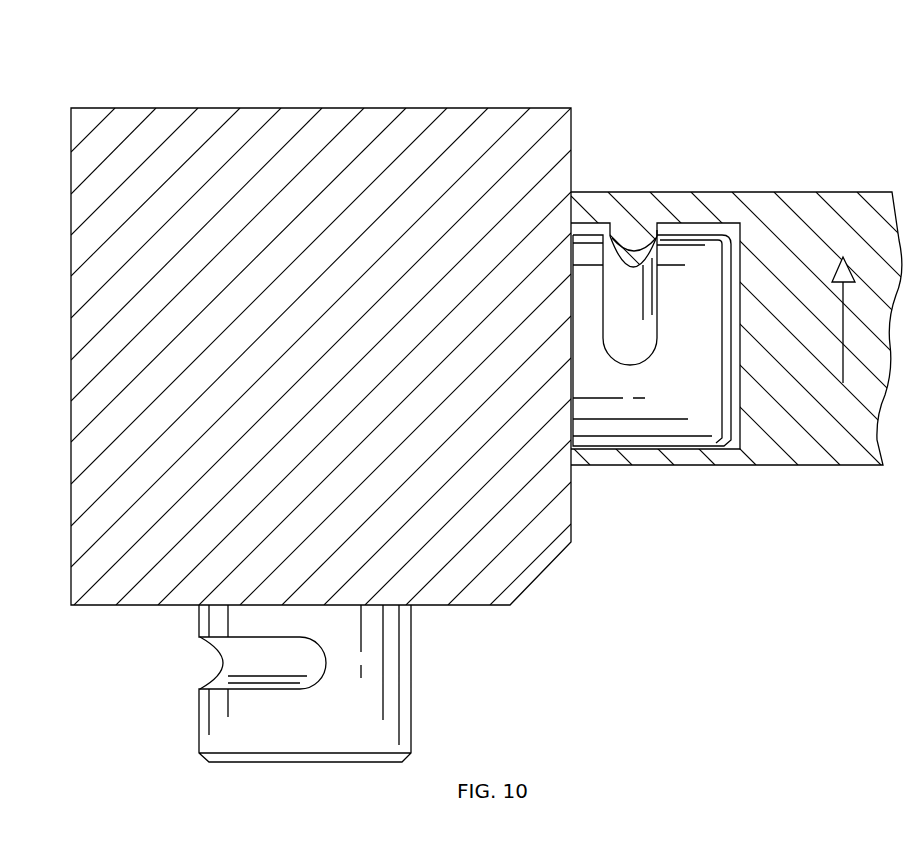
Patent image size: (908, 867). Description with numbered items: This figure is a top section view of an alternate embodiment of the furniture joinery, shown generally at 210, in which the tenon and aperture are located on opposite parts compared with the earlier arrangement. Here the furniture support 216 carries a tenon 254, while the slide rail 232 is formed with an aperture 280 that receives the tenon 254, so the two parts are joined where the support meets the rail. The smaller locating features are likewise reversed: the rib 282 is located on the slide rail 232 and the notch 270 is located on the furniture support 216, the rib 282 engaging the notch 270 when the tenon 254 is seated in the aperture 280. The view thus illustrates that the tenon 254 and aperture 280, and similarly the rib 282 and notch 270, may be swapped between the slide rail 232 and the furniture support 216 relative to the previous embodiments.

The connector assembly 210 is at (746, 79).
The furniture support 216 is at (499, 625).
The slide rail 232 is at (790, 207).
The tenon 254 is at (684, 430).
The notch 270 is at (645, 350).
The aperture 280 is at (692, 222).
The rib 282 is at (632, 230).